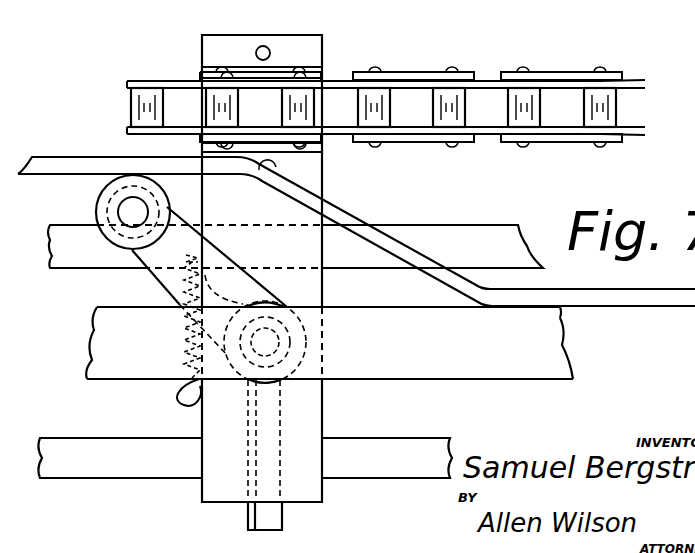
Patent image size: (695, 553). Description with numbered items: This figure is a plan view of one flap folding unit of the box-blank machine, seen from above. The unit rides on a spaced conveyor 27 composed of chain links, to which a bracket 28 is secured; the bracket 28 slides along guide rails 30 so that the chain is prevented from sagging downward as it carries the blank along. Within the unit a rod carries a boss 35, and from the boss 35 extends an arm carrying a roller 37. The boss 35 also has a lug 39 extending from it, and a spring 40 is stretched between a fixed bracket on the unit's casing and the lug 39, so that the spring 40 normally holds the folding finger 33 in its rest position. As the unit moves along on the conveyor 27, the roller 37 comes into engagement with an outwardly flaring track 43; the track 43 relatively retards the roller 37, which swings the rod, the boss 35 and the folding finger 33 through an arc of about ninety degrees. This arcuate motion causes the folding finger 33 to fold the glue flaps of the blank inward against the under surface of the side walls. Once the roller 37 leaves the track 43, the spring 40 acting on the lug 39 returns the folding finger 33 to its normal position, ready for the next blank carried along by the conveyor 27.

The spaced conveyor 27 is at (441, 100).
The bracket 28 is at (312, 181).
The guide rail 30 is at (436, 236).
The folding finger 33 is at (280, 450).
The boss 35 is at (315, 337).
The roller 37 is at (100, 205).
The lug 39 is at (178, 280).
The spring 40 is at (182, 337).
The outwardly flaring track 43 is at (347, 221).